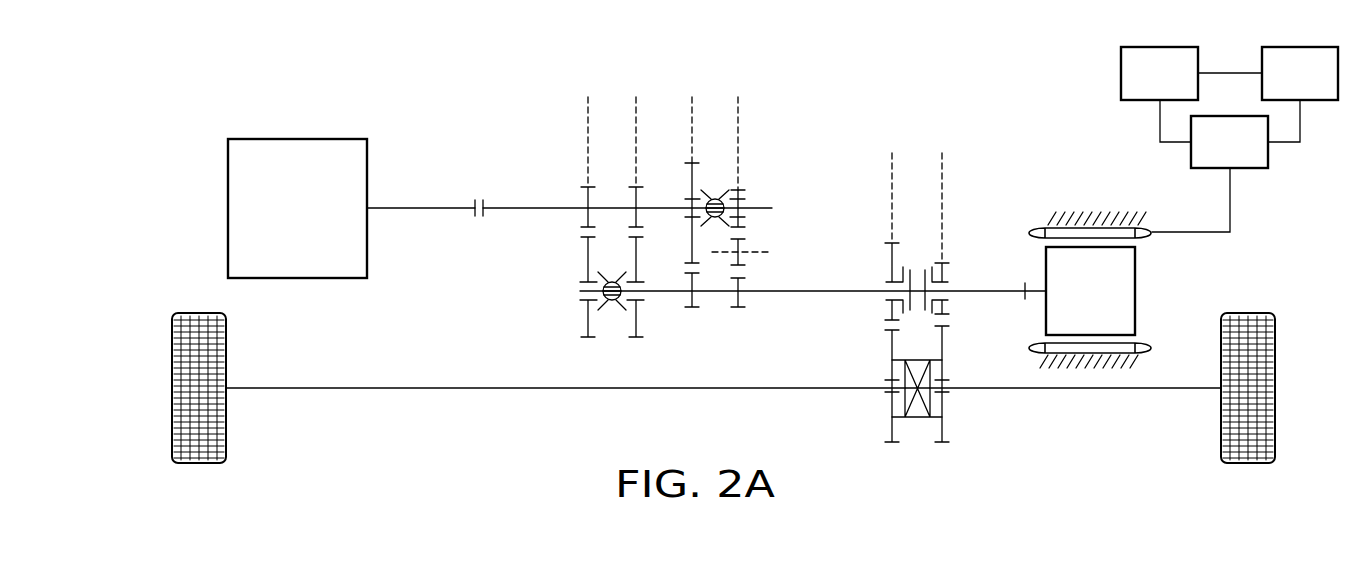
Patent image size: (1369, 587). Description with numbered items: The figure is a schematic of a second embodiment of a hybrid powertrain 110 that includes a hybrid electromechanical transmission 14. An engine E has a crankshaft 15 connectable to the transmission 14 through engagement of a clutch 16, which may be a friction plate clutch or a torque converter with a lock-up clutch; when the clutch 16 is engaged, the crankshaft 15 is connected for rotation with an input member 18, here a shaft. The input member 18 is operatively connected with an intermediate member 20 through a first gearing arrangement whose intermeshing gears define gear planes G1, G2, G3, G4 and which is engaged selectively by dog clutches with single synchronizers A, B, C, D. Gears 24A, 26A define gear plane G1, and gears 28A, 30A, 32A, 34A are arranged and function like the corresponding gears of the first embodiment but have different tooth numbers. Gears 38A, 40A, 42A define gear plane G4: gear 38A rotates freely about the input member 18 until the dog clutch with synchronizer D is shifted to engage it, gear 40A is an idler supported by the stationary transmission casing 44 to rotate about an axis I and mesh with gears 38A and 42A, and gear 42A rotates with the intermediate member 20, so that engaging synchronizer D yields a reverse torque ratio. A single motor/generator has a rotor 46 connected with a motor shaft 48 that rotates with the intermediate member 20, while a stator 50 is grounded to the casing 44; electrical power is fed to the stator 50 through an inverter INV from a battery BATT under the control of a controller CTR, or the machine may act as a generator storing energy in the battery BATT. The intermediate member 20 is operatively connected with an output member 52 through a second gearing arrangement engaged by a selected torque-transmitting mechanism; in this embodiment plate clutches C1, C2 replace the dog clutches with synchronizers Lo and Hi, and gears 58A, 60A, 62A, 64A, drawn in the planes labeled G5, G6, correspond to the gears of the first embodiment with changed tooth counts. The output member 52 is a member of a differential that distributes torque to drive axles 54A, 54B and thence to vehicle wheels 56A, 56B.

The powertrain 110 is at (841, 64).
The hybrid electromechanical transmission 14 is at (846, 103).
The crankshaft 15 is at (422, 207).
The clutch 16 is at (479, 190).
The input member 18 is at (538, 209).
The intermediate member 20 is at (798, 293).
The gear 24A is at (586, 200).
The gear 26A is at (586, 258).
The gear 28A is at (634, 200).
The gear 30A is at (633, 330).
The gear 32A is at (690, 242).
The gear 34A is at (694, 300).
The gear 38A is at (741, 190).
The idler gear 40A is at (741, 261).
The gear 42A is at (741, 300).
The transmission casing 44 is at (1093, 211).
The rotor 46 is at (1136, 290).
The motor shaft 48 is at (1033, 293).
The stator 50 is at (1134, 240).
The output member 52 is at (918, 418).
The drive axle 54A is at (505, 390).
The drive axle 54B is at (1086, 392).
The vehicle wheel 56A is at (198, 313).
The vehicle wheel 56B is at (1248, 313).
The gear 58A is at (891, 262).
The gear 60A is at (890, 345).
The gear 62A is at (944, 275).
The gear 64A is at (945, 428).
The plate clutch C1 is at (930, 258).
The plate clutch C2 is at (906, 258).
The gear plane G1 is at (588, 110).
The gear plane G2 is at (636, 110).
The gear plane G3 is at (692, 103).
The gear plane G4 is at (738, 103).
The gear set G5 is at (892, 160).
The gear set G6 is at (942, 160).
The synchronizer A is at (602, 308).
The synchronizer B is at (623, 308).
The synchronizer C is at (711, 188).
The synchronizer D is at (720, 188).
The axis I is at (756, 250).
The engine E is at (297, 208).
The battery BATT is at (1191, 94).
The controller CTR is at (1300, 94).
The inverter INV is at (1210, 174).